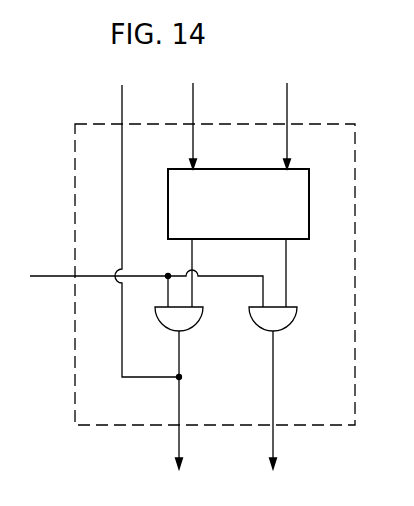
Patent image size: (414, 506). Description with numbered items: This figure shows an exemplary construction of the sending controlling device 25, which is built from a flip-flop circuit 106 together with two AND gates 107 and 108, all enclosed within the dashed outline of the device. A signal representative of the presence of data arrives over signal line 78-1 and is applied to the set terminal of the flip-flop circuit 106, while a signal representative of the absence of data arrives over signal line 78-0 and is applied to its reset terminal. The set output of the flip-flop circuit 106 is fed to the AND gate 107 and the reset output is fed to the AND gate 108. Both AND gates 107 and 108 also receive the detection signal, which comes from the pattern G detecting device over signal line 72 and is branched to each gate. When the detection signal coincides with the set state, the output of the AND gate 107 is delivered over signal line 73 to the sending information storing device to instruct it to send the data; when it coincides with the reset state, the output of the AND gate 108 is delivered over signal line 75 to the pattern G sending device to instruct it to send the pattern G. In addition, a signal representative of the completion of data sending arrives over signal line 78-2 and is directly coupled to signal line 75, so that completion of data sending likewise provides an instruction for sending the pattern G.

The sending controlling device 25 is at (401, 138).
The flip-flop circuit 106 is at (263, 168).
The signal line 78-2 is at (122, 112).
The signal line 78-0 is at (220, 104).
The signal line 78-1 is at (287, 111).
The signal line 72 is at (57, 276).
The AND gate 108 is at (204, 316).
The AND gate 107 is at (298, 316).
The signal line 75 is at (179, 438).
The signal line 73 is at (273, 438).